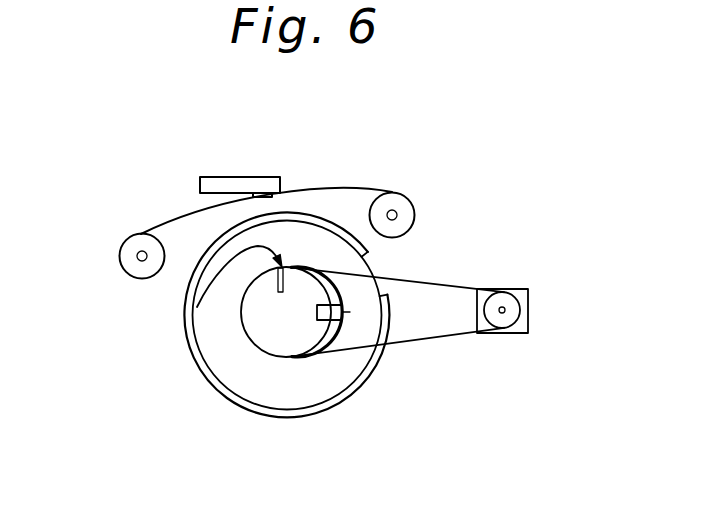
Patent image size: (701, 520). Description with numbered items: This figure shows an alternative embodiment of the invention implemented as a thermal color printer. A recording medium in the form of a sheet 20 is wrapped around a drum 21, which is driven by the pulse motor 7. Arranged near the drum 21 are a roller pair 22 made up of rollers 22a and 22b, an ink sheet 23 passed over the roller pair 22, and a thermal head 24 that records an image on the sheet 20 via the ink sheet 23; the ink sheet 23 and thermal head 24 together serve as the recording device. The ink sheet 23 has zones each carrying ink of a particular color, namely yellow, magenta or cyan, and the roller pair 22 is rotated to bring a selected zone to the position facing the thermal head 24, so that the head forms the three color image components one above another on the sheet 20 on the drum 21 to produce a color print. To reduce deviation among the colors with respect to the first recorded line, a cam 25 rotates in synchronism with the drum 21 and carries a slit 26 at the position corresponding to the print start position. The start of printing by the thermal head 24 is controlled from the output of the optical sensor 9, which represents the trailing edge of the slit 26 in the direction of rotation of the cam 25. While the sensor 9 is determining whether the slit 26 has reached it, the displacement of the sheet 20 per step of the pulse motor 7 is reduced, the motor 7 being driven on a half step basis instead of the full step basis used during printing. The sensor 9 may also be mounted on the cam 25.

The pulse motor 7 is at (528, 305).
The optical sensor 9 is at (350, 312).
The sheet 20 is at (194, 352).
The drum 21 is at (380, 286).
The roller pair 22 is at (435, 208).
The roller 22a is at (397, 212).
The roller 22b is at (137, 256).
The ink sheet 23 is at (178, 218).
The thermal head 24 is at (270, 177).
The cam 25 is at (262, 352).
The slit 26 is at (197, 307).